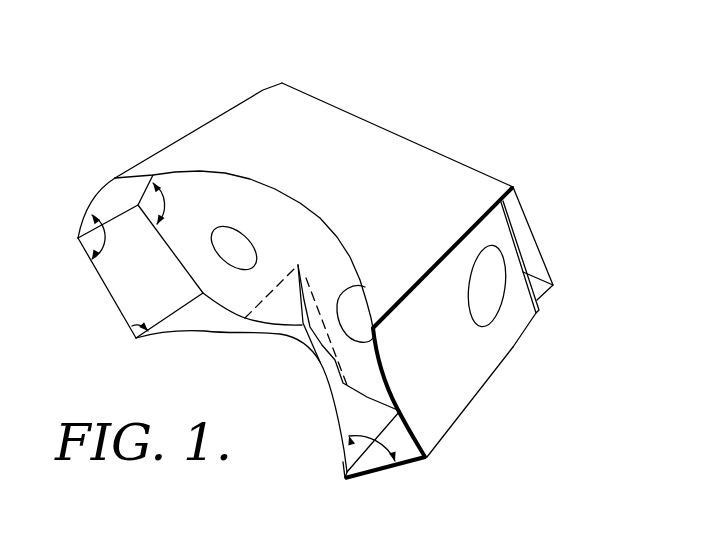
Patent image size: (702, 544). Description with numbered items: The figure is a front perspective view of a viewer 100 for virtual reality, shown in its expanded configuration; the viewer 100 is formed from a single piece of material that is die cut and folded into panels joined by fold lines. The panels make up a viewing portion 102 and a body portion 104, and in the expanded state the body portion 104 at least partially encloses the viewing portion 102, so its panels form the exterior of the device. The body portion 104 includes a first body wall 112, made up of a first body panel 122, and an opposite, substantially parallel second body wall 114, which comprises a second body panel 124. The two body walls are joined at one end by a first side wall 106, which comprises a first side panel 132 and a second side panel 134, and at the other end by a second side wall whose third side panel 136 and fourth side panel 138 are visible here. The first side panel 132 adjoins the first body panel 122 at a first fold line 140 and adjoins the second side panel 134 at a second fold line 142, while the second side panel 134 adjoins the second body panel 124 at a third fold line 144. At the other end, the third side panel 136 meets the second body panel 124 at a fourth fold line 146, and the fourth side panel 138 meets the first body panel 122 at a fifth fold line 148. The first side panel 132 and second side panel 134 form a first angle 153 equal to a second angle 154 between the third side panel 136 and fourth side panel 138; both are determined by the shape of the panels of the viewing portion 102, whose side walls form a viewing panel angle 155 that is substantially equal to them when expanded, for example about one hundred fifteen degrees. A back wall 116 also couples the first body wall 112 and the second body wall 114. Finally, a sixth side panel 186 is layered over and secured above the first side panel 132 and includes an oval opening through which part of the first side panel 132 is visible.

The viewer 100 is at (443, 55).
The viewing portion 102 is at (233, 298).
The body portion 104 is at (449, 127).
The first side wall 106 is at (466, 393).
The first body wall 112 is at (314, 106).
The second body wall 114 is at (289, 365).
The back wall 116 is at (540, 230).
The first body panel 122 is at (377, 181).
The second body panel 124 is at (340, 395).
The first side panel 132 is at (492, 293).
The second side panel 134 is at (382, 460).
The third side panel 136 is at (167, 291).
The fourth side panel 138 is at (108, 197).
The first fold line 140 is at (466, 230).
The second fold line 142 is at (445, 440).
The third fold line 144 is at (347, 471).
The fourth fold line 146 is at (128, 336).
The fifth fold line 148 is at (182, 136).
The first angle 153 is at (350, 441).
The second angle 154 is at (103, 240).
The viewing panel angle 155 is at (168, 200).
The sixth side panel 186 is at (460, 361).